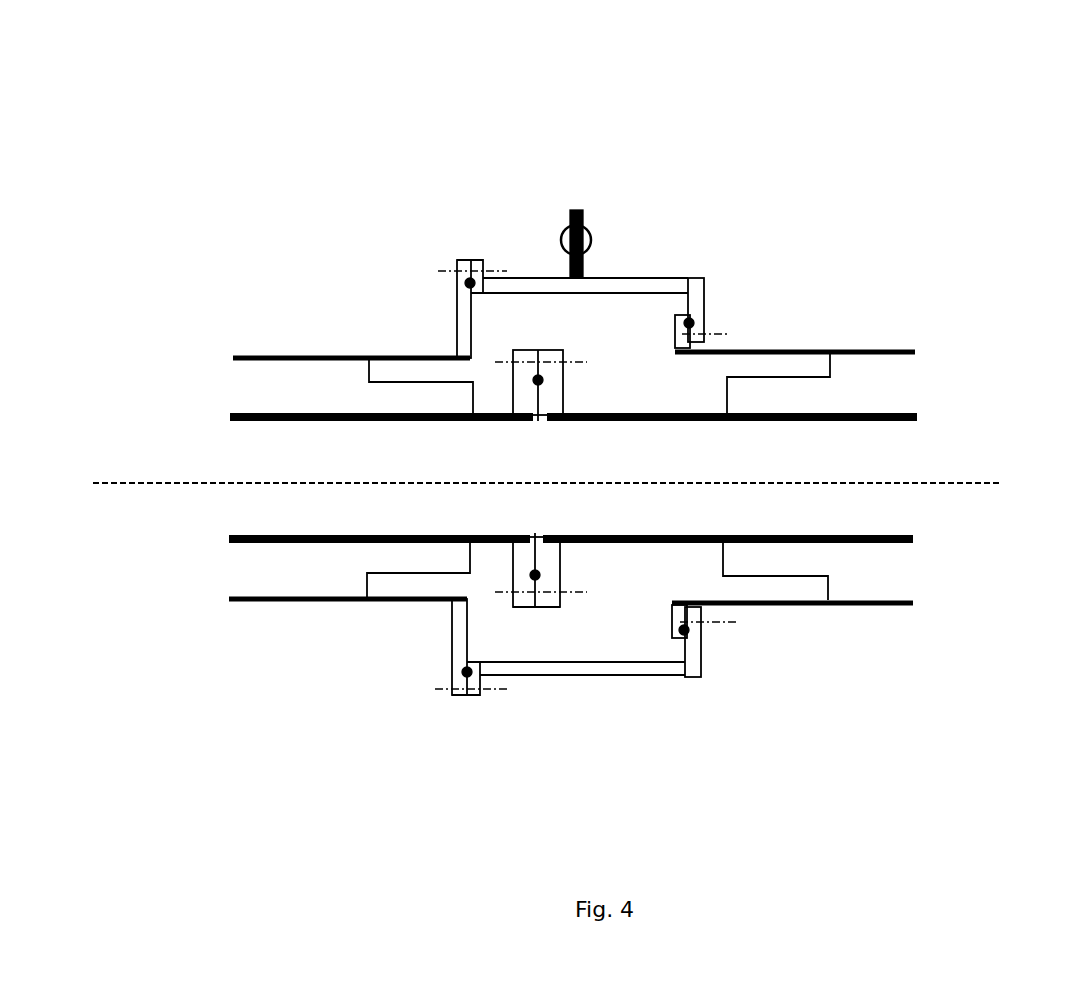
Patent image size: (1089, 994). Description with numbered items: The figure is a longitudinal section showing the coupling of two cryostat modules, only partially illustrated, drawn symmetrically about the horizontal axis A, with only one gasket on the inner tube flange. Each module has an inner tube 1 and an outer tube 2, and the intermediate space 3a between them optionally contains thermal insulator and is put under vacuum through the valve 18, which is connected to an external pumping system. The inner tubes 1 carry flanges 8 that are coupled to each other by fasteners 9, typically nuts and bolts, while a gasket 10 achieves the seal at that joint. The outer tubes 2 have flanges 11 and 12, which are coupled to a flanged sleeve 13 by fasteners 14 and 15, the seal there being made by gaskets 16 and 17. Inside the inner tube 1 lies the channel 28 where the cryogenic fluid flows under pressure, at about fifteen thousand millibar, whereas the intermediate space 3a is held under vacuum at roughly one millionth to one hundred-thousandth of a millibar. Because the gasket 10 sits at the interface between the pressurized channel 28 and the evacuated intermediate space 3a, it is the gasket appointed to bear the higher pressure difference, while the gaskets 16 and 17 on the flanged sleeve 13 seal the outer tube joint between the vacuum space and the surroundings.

The inner tube 1 is at (430, 542).
The outer tube 2 is at (323, 352).
The intermediate space 3a is at (623, 612).
The flange 8 is at (520, 570).
The fastener 9 is at (521, 590).
The gasket 10 is at (536, 576).
The flange 11 is at (457, 342).
The flange 12 is at (675, 343).
The flanged sleeve 13 is at (643, 285).
The fastener 14 is at (440, 688).
The fastener 15 is at (723, 625).
The gasket 16 is at (456, 262).
The gasket 17 is at (689, 323).
The valve 18 is at (570, 210).
The channel 28 is at (668, 433).
The axis of symmetry A is at (569, 470).